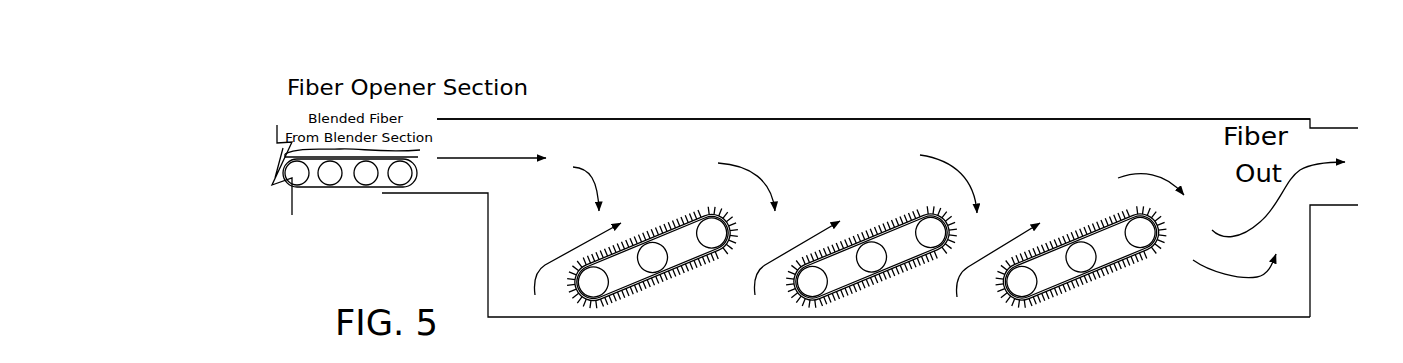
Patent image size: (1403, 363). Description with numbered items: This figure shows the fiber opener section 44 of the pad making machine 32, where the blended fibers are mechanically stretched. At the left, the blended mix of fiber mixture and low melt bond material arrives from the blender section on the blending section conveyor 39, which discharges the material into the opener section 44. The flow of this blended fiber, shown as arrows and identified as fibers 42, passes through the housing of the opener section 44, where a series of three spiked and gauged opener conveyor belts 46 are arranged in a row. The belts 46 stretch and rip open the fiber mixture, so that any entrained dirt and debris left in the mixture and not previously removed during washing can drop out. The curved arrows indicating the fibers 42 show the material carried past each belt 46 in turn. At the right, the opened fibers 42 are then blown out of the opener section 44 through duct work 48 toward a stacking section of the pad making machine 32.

The pad making machine 32 is at (1023, 91).
The blending section conveyor 39 is at (363, 180).
The fibers 42 is at (500, 157).
The opener section 44 is at (889, 140).
The spiked and gauged opener conveyor belts 46 is at (643, 283).
The duct work 48 is at (1323, 205).